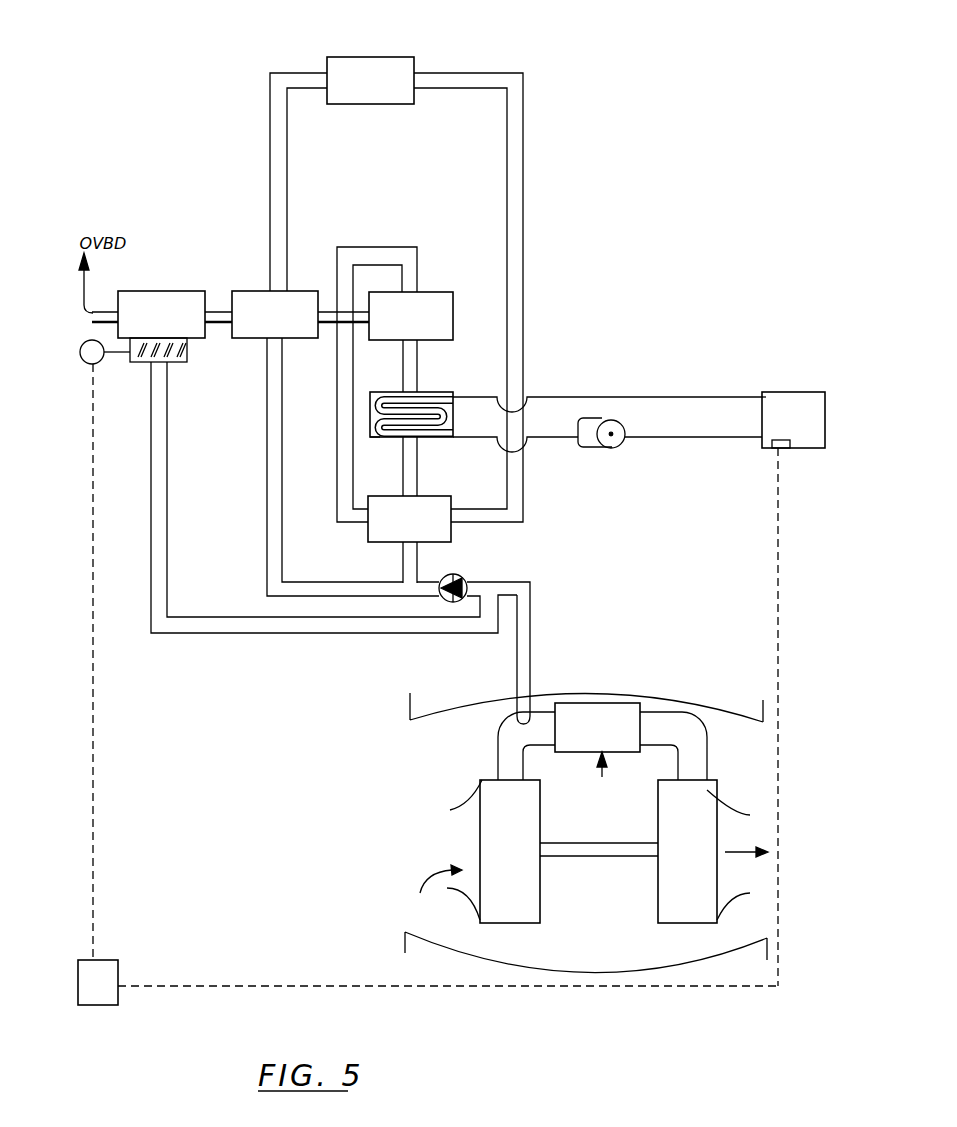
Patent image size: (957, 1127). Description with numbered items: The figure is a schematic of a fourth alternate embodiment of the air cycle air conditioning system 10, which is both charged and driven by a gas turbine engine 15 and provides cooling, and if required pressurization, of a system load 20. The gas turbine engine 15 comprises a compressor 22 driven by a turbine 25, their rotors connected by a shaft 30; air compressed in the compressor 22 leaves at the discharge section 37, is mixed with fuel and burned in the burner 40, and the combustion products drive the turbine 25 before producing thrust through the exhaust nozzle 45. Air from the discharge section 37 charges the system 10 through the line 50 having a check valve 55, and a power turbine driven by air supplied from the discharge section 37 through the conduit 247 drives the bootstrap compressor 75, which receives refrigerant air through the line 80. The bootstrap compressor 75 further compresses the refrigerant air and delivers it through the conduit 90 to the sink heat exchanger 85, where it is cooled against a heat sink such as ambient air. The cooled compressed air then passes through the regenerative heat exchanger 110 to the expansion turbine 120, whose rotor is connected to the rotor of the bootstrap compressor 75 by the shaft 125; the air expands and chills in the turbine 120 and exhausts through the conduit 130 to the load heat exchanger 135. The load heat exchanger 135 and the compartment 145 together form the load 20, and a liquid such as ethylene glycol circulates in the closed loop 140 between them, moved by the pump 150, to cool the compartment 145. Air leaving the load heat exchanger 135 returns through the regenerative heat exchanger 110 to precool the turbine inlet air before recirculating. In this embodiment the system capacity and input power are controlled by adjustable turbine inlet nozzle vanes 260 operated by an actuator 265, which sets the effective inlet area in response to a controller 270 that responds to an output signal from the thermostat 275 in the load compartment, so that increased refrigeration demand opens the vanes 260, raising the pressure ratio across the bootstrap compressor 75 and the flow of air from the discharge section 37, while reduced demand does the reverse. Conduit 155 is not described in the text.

The air conditioning system 10 is at (553, 126).
The gas turbine engine 15 is at (731, 975).
The system load 20 is at (794, 381).
The compressor 22 is at (488, 790).
The turbine 25 is at (710, 792).
The shaft 30 is at (413, 357).
The discharge section 37 is at (507, 738).
The burner 40 is at (635, 707).
The exhaust nozzle 45 is at (750, 893).
The line 50 is at (520, 585).
The check valve 55 is at (465, 580).
The bootstrap compressor 75 is at (275, 314).
The line 80 is at (270, 462).
The sink heat exchanger 85 is at (372, 58).
The conduit 90 is at (277, 122).
The regenerative heat exchanger 110 is at (450, 500).
The expansion turbine 120 is at (440, 297).
The shaft 125 is at (330, 317).
The conduit 130 is at (405, 373).
The load heat exchanger 135 is at (370, 438).
The closed-loop 140 is at (548, 397).
The compartment 145 is at (768, 397).
The pump 150 is at (622, 447).
The conduit 155 is at (411, 465).
The conduit 247 is at (278, 633).
The adjustable turbine inlet nozzle vanes 260 is at (185, 350).
The actuator 265 is at (95, 364).
The controller 270 is at (115, 962).
The thermostat 275 is at (772, 448).